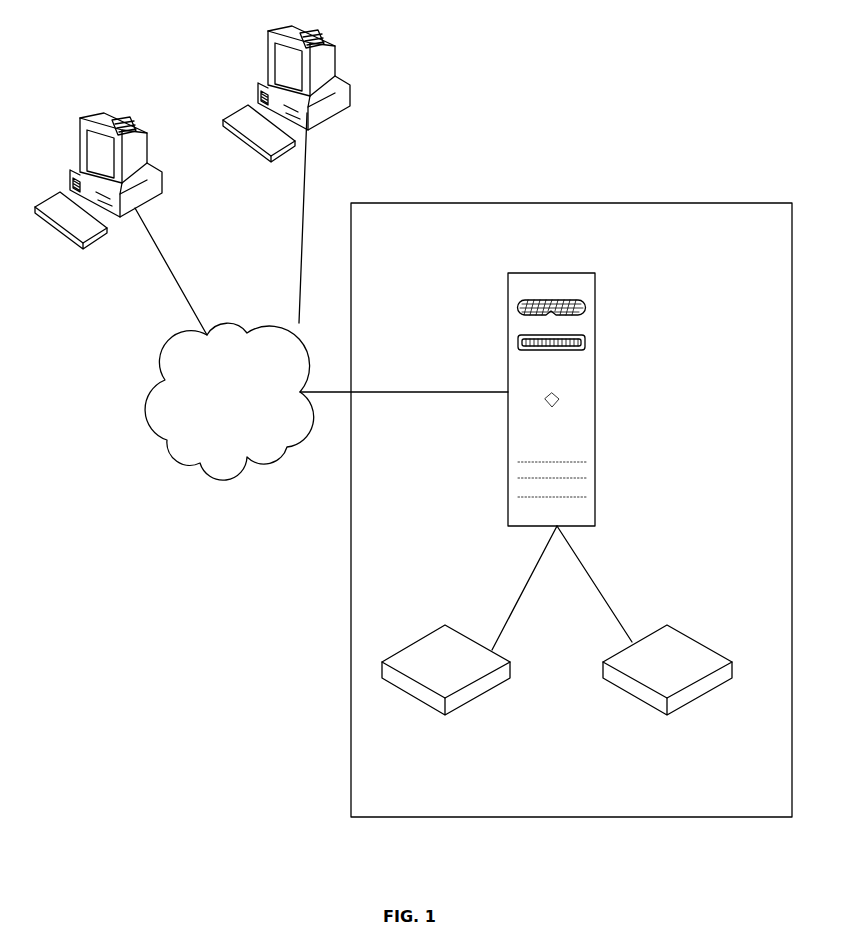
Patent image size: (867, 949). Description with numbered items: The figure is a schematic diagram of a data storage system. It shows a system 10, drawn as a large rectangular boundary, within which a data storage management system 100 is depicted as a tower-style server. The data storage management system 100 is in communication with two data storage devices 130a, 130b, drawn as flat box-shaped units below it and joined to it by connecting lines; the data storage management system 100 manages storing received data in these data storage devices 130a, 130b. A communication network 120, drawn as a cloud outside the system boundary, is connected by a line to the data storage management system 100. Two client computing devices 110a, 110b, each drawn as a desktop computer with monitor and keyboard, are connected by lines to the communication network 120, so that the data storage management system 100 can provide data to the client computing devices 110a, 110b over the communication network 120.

The system 10 is at (752, 259).
The data storage management system 100 is at (557, 272).
The client computing device 110a is at (65, 233).
The client computing device 110b is at (352, 82).
The communication network 120 is at (242, 425).
The data storage device 130a is at (407, 695).
The data storage device 130b is at (630, 695).